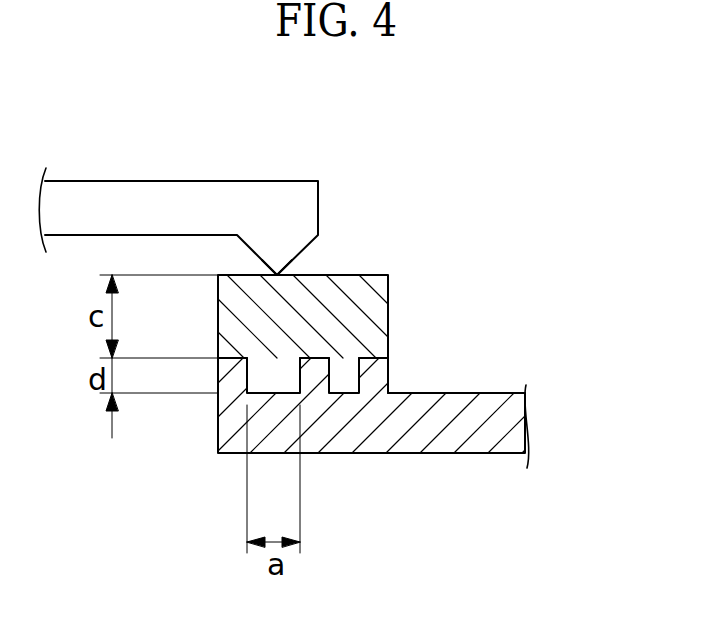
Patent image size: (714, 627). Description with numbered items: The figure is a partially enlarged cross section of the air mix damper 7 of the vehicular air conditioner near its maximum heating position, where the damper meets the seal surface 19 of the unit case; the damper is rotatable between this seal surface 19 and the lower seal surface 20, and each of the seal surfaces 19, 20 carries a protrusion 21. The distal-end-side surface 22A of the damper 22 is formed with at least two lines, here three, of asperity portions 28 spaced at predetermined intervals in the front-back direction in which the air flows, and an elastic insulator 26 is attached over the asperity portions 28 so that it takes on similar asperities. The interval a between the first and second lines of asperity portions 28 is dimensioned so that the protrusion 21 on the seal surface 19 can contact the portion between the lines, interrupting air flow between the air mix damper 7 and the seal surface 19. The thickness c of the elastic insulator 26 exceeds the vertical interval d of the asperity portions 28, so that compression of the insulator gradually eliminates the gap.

The air mix damper 7 is at (545, 410).
The seal surface 19 is at (147, 192).
The seal surface 20 is at (178, 199).
The protrusion 21 is at (275, 262).
The damper 22 is at (445, 440).
The distal-end-side surface 22A is at (455, 393).
The elastic insulator 26 is at (370, 295).
The asperity portions 28 is at (217, 375).